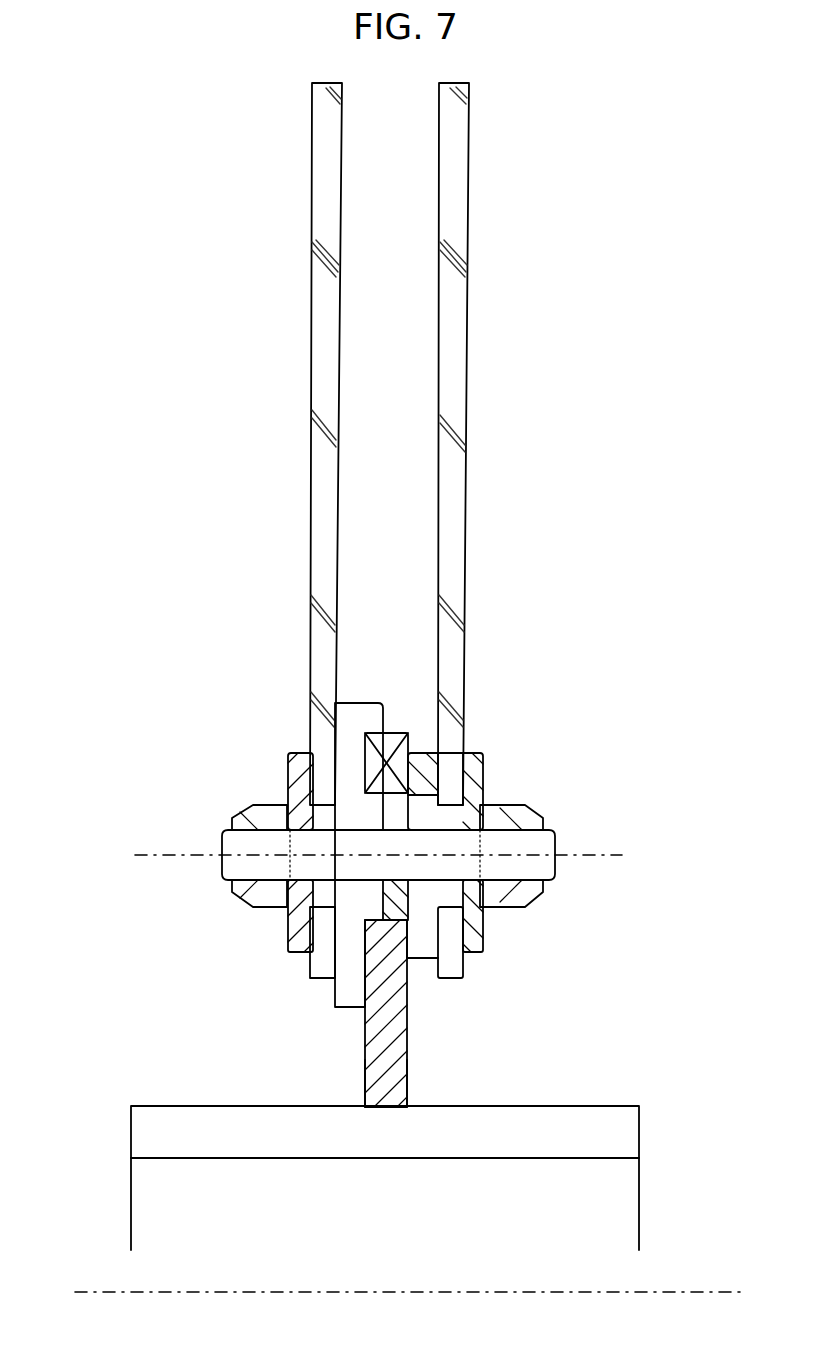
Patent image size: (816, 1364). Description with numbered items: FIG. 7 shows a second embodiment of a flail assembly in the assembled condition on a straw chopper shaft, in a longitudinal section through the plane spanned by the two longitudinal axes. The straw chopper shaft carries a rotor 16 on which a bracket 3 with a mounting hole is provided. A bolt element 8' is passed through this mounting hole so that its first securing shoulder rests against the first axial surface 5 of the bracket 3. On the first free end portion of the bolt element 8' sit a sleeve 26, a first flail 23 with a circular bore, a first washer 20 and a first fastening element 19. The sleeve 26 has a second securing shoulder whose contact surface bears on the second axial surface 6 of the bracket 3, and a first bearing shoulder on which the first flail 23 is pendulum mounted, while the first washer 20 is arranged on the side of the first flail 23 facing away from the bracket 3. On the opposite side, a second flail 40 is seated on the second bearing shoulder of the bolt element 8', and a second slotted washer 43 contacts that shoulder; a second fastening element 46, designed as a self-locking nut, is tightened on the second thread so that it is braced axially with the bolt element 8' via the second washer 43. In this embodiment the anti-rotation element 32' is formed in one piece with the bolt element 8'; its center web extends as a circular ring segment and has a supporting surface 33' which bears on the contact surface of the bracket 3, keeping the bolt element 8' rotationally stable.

The second flail 40 is at (324, 152).
The first flail 23 is at (450, 198).
The sleeve 26 is at (470, 953).
The anti-rotation element 32' is at (386, 804).
The supporting surface 33' is at (456, 785).
The first washer 20 is at (473, 775).
The second slotted washer 43 is at (290, 786).
The second fastening element 46 is at (250, 816).
The first fastening element 19 is at (518, 808).
The bolt element 8' is at (445, 866).
The bracket 3 is at (390, 1037).
The first axial surface 5 is at (402, 1071).
The second axial surface 6 is at (362, 1095).
The rotor 16 is at (583, 1158).